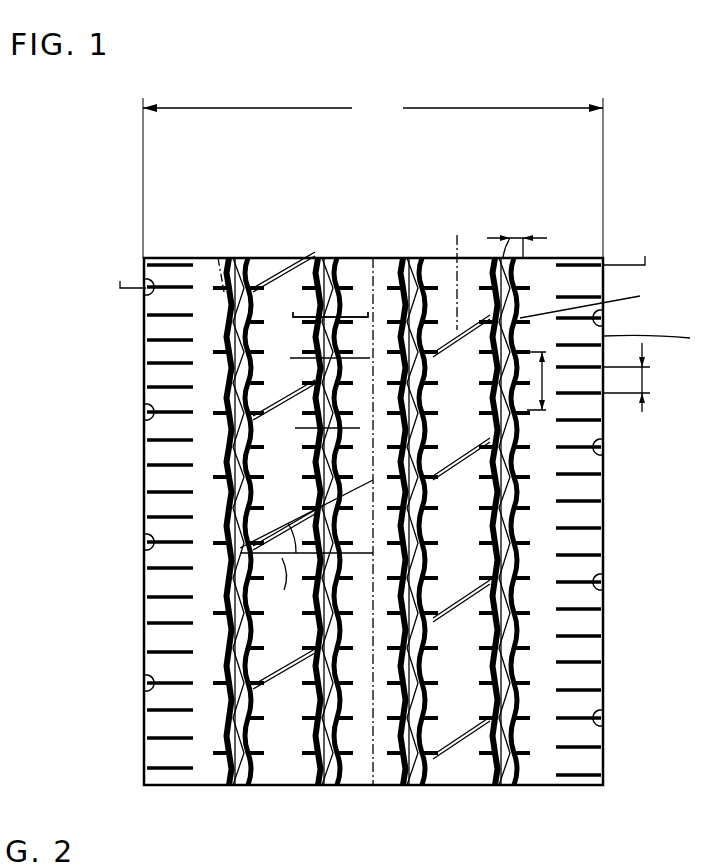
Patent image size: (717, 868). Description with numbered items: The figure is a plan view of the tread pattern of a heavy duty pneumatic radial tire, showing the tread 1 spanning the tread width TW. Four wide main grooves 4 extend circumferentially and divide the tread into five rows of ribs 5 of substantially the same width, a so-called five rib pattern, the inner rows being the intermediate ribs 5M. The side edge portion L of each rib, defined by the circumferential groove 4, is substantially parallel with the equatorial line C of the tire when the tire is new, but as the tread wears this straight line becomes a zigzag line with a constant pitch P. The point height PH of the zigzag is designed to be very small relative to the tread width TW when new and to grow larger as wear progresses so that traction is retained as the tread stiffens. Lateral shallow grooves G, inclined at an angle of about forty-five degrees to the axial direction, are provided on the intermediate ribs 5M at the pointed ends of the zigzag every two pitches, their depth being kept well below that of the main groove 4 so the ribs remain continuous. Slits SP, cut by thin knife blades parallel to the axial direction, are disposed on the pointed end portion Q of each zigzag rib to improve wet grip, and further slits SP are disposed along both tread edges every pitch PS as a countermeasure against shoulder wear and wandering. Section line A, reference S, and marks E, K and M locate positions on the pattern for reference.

The tread 1 is at (143, 372).
The wide circumferential groove 4 is at (237, 258).
The rib 5 is at (205, 755).
The intermediate rib 5M is at (280, 735).
The side edge portion L is at (437, 842).
The equatorial line C is at (372, 538).
The lateral groove G is at (366, 266).
The slit SP is at (218, 258).
The tread width TW is at (373, 176).
The point height PH is at (524, 230).
The section line A- A is at (384, 260).
The pointed end portion Q is at (598, 297).
The shoulder sipe S is at (658, 342).
The pitch P is at (540, 381).
The pitch of slits PS is at (645, 377).
The groove edge position E is at (327, 299).
The kink position K is at (327, 347).
The middle position M is at (332, 418).